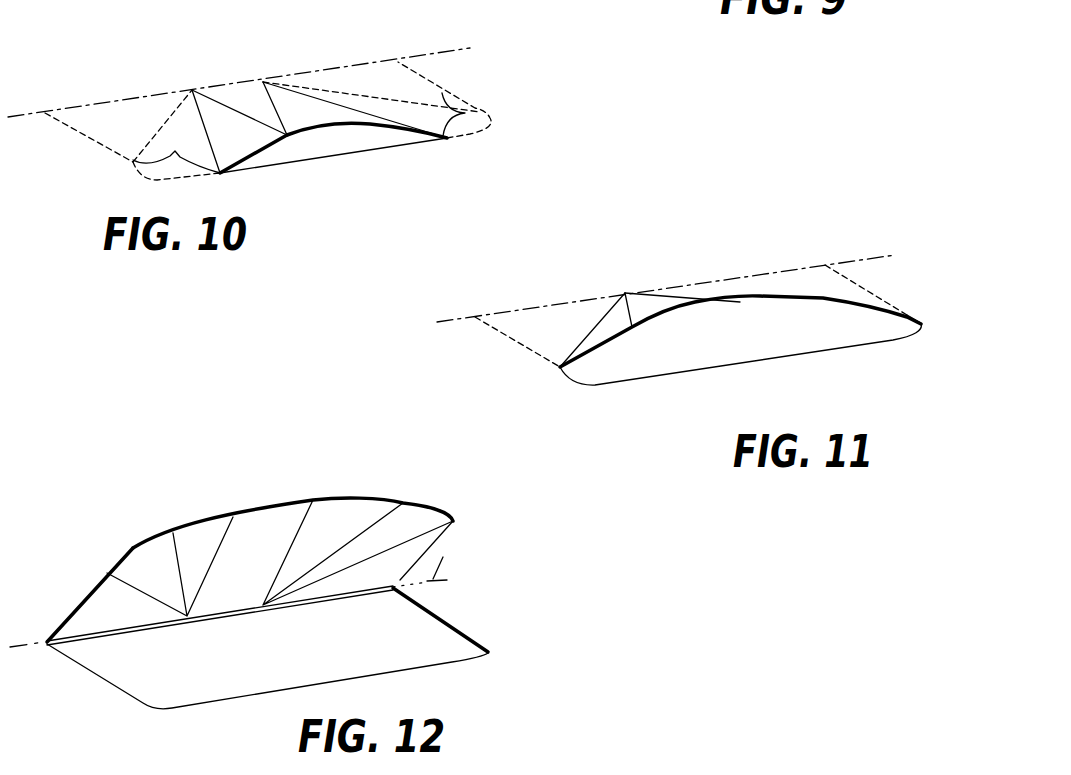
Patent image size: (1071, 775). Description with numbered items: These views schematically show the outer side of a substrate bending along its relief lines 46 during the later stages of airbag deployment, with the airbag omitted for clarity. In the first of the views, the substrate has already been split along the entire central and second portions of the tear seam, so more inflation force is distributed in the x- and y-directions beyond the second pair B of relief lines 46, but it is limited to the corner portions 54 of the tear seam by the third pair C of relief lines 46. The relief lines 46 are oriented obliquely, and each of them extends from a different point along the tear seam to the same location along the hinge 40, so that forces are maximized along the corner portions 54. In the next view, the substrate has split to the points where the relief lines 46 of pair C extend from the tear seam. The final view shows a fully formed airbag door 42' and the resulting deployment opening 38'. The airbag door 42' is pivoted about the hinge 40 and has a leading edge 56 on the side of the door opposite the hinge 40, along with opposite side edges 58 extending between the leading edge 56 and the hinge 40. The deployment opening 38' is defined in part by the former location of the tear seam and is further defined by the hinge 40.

In FIG. 10, the second pair of relief lines B is at (198, 117).
In FIG. 10, the third pair of relief lines C is at (147, 143).
In FIG. 11, the third pair of relief lines C is at (583, 333).
In FIG. 10, the relief lines 46 is at (407, 100).
In FIG. 11, the relief lines 46 is at (605, 310).
In FIG. 10, the corner portions 54 is at (303, 117).
In FIG. 12, the leading edge 56 is at (233, 511).
In FIG. 12, the side edges 58 is at (78, 606).
In FIG. 12, the airbag door 42' is at (170, 551).
In FIG. 12, the hinge 40 is at (454, 561).
In FIG. 12, the deployment opening 38' is at (286, 628).